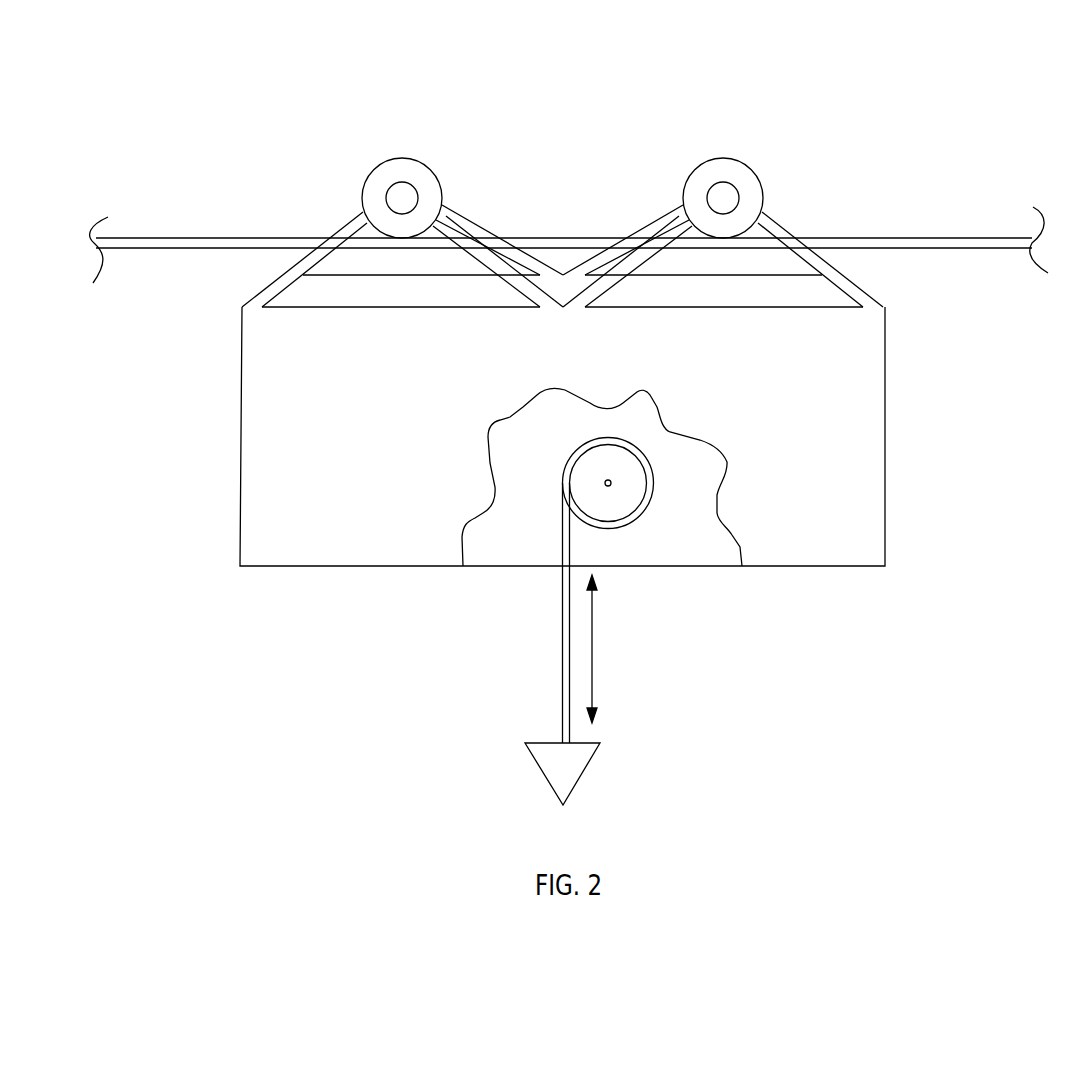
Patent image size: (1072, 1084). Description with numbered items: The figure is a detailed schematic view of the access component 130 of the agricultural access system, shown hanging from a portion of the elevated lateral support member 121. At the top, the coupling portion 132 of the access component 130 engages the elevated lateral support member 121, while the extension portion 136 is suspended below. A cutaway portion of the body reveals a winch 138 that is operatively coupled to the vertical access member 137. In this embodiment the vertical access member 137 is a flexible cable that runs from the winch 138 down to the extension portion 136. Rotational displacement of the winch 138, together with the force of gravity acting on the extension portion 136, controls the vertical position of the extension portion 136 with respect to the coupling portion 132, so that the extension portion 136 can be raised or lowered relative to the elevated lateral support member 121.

The elevated lateral support member 121 is at (863, 243).
The access component 130 is at (158, 418).
The coupling portion 132 is at (397, 158).
The extension portion 136 is at (577, 760).
The vertical access member 137 is at (563, 657).
The winch 138 is at (588, 503).